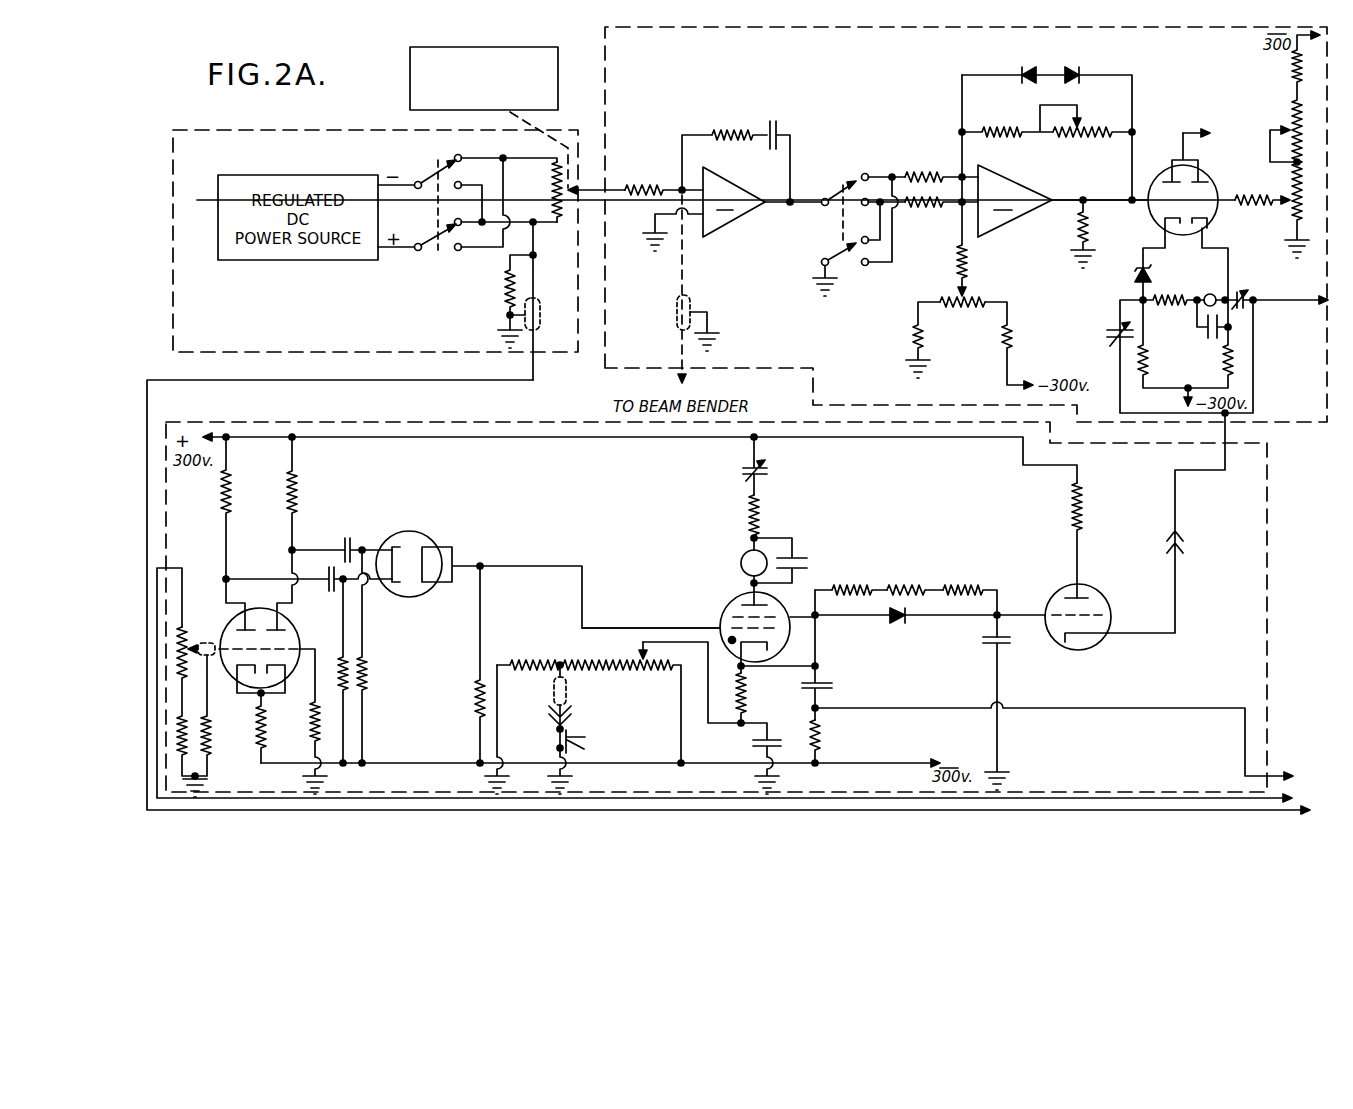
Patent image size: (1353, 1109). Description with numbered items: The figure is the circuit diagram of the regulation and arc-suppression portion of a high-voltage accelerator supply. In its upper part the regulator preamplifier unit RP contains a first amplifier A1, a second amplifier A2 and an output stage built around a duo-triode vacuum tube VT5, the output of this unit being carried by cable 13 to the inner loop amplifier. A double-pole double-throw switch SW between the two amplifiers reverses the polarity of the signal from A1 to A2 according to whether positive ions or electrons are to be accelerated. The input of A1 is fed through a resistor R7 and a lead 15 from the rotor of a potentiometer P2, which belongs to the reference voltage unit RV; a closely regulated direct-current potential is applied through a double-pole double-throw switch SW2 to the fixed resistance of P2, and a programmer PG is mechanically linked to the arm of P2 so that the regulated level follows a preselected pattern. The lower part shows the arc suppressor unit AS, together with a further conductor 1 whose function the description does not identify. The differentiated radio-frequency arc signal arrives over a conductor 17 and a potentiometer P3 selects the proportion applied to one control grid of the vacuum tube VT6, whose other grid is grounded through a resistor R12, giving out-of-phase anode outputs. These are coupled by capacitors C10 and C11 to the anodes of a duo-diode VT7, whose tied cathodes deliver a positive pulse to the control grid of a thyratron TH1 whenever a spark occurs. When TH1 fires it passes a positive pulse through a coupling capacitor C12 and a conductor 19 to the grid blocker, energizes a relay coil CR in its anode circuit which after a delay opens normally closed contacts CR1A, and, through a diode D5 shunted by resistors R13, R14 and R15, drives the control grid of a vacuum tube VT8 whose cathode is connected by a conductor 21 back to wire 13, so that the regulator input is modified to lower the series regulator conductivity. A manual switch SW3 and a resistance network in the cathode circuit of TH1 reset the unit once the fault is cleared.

The control system boundary 1 is at (185, 385).
The cable 13 is at (1295, 300).
The lead 15 is at (588, 188).
The conductor 17 is at (170, 567).
The conductor 19 is at (905, 708).
The conductor 21 is at (1175, 598).
The programmer PG is at (410, 60).
The reference voltage unit RV is at (352, 130).
The regulator preamplifier unit RP is at (603, 41).
The arc suppressor unit AS is at (440, 421).
The potentiometer P2 is at (553, 190).
The potentiometer P3 is at (188, 632).
The double-pole double-throw switch SW is at (847, 178).
The double-pole double-throw switch SW2 is at (440, 247).
The manual switch SW3 is at (584, 728).
The resistor R7 is at (646, 184).
The resistor R12 is at (311, 712).
The resistor R13 is at (851, 583).
The resistor R14 is at (905, 583).
The resistor R15 is at (960, 583).
The first amplifier A1 is at (732, 186).
The second amplifier A2 is at (1055, 167).
The duo-triode vacuum tube VT5 is at (1214, 182).
The vacuum tube VT6 is at (288, 629).
The duo-diode VT7 is at (413, 532).
The vacuum tube VT8 is at (1099, 593).
The thyratron TH1 is at (728, 606).
The normally closed relay contacts CR1A is at (763, 478).
The relay coil CR is at (754, 563).
The capacitor C10 is at (346, 543).
The capacitor C11 is at (328, 572).
The coupling capacitor C12 is at (820, 684).
The diode D5 is at (898, 626).